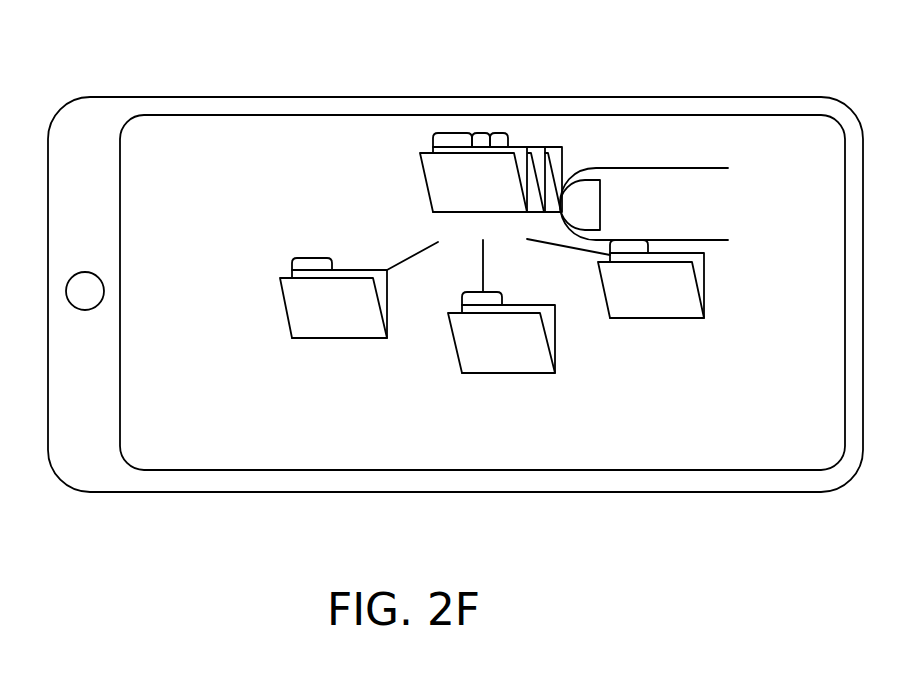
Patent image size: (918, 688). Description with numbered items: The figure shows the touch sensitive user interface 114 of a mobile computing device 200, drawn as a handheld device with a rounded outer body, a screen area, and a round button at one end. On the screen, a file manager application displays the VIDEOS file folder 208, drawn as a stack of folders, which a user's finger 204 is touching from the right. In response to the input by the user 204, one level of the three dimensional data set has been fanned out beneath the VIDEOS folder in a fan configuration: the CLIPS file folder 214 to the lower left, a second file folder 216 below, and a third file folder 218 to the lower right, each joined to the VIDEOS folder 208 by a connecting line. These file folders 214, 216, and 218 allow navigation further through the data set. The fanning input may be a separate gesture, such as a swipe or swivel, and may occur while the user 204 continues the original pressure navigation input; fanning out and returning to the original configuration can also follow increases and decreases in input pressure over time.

The mobile computing device 200 is at (155, 97).
The touch sensitive user interface 114 is at (333, 170).
The VIDEOS file folder 208 is at (460, 133).
The user's finger 204 is at (650, 168).
The CLIPS file folder 214 is at (350, 270).
The file folder 216 is at (553, 372).
The file folder 218 is at (703, 318).